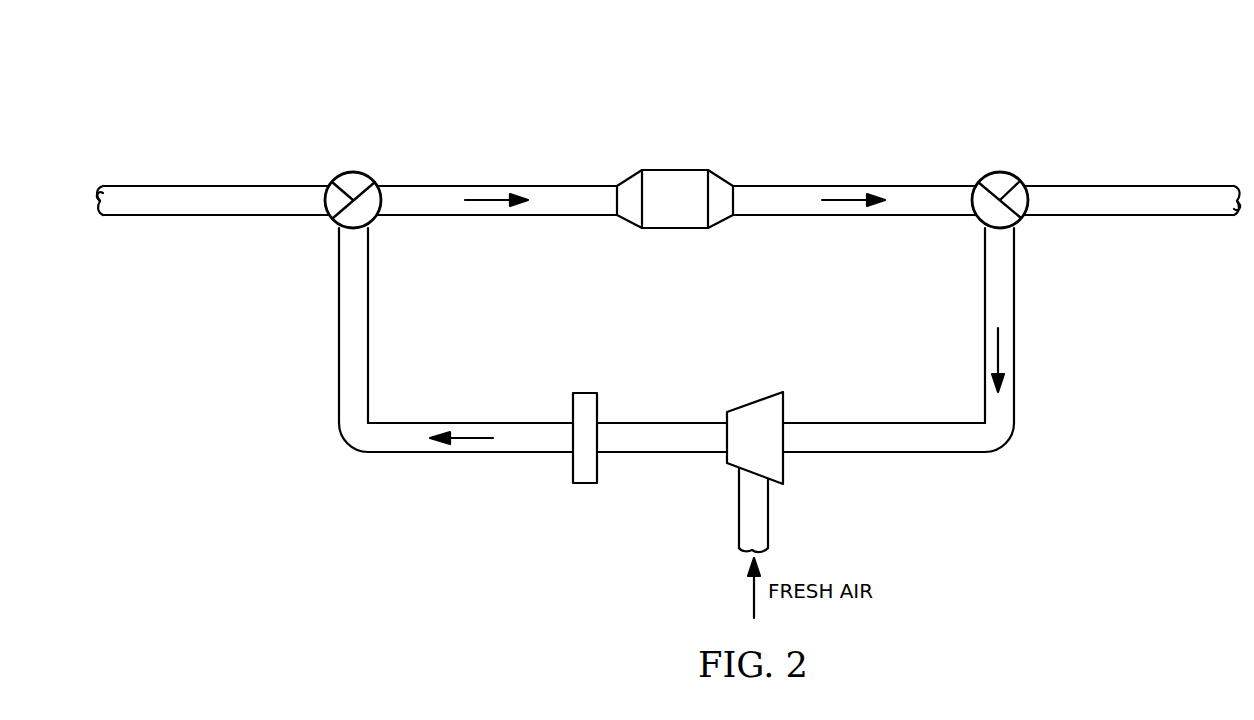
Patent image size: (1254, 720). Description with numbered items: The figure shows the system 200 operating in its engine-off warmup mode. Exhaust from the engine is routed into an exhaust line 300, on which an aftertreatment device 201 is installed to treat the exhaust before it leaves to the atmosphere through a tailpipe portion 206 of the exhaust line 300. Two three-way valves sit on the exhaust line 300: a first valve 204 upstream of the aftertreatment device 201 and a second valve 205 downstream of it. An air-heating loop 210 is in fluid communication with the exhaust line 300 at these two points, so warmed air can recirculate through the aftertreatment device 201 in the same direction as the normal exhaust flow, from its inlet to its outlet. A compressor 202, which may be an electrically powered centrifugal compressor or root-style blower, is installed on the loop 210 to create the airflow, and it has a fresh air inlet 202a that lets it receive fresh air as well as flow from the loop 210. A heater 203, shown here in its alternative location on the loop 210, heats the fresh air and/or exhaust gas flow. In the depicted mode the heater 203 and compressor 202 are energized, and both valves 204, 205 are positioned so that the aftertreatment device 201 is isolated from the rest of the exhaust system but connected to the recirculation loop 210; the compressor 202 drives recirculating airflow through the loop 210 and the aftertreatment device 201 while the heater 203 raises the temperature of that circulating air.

The system 200 is at (557, 81).
The exhaust line 300 is at (215, 184).
The first valve 204 is at (353, 172).
The aftertreatment device 201 is at (672, 170).
The second valve 205 is at (1000, 172).
The tailpipe portion 206 is at (1128, 186).
The air-heating loop 210 is at (339, 324).
The heater 203 is at (586, 485).
The compressor 202 is at (752, 400).
The fresh air inlet 202a is at (769, 512).